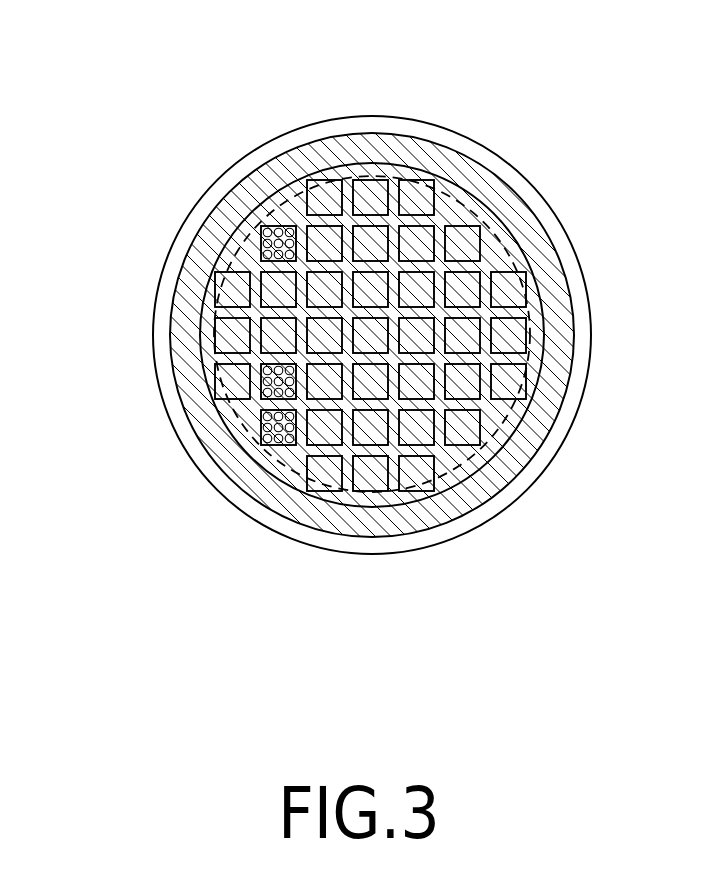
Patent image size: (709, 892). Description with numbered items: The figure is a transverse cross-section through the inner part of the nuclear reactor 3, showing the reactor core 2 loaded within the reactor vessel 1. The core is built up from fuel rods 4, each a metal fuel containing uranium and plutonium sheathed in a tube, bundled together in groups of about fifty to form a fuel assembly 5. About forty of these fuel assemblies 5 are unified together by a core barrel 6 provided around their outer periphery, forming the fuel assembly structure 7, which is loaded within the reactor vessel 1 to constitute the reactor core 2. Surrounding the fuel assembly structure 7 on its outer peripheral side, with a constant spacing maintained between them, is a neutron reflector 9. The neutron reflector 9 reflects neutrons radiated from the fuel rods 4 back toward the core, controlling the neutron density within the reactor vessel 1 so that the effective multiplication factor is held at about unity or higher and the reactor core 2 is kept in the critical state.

The reactor vessel 1 is at (430, 126).
The reactor core 2 is at (370, 336).
The nuclear reactor 3 is at (538, 110).
The fuel rod 4 is at (260, 232).
The fuel assembly 5 is at (483, 243).
The core barrel 6 is at (293, 494).
The fuel assembly structure 7 is at (349, 243).
The neutron reflector 9 is at (540, 423).